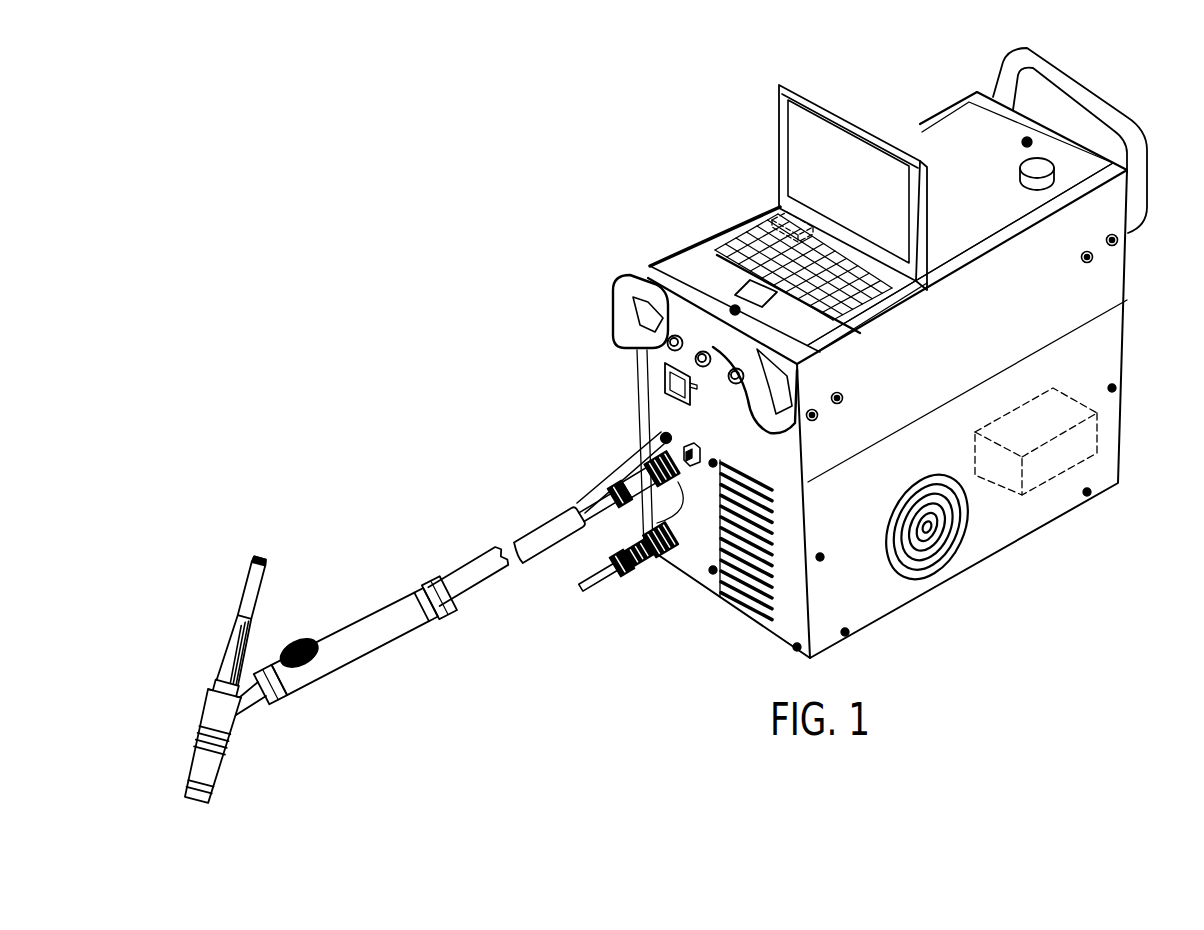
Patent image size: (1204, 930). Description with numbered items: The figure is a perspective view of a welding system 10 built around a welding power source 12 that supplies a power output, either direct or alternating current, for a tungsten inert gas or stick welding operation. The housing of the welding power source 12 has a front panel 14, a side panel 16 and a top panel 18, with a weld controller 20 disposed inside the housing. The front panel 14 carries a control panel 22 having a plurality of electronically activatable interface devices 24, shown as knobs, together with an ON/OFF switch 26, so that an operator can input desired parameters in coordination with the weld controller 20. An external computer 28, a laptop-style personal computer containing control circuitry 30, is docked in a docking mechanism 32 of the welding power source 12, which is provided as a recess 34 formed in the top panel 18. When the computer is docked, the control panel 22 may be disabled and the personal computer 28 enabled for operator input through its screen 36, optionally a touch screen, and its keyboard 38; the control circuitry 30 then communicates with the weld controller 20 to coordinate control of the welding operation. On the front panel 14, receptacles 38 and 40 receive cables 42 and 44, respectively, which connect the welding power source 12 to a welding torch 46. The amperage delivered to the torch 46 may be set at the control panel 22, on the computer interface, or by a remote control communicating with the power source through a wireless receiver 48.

The welding system 10 is at (730, 78).
The welding power source 12 is at (930, 113).
The front panel 14 is at (668, 412).
The side panel 16 is at (1128, 275).
The top panel 18 is at (1095, 153).
The weld controller 20 is at (1100, 427).
The control panel 22 is at (662, 352).
The electronically activatable interface devices 24 is at (703, 352).
The ON/OFF switch 26 is at (664, 375).
The external computer 28 is at (762, 152).
The control circuitry 30 is at (780, 210).
The docking mechanism 32 is at (930, 318).
The recess 34 is at (860, 337).
The screen 36 is at (812, 121).
The keyboard 38 is at (723, 233).
The receptacle 40 is at (643, 527).
The cable 42 is at (604, 479).
The cable 44 is at (480, 587).
The welding torch 46 is at (208, 712).
The wireless receiver 48 is at (1045, 165).